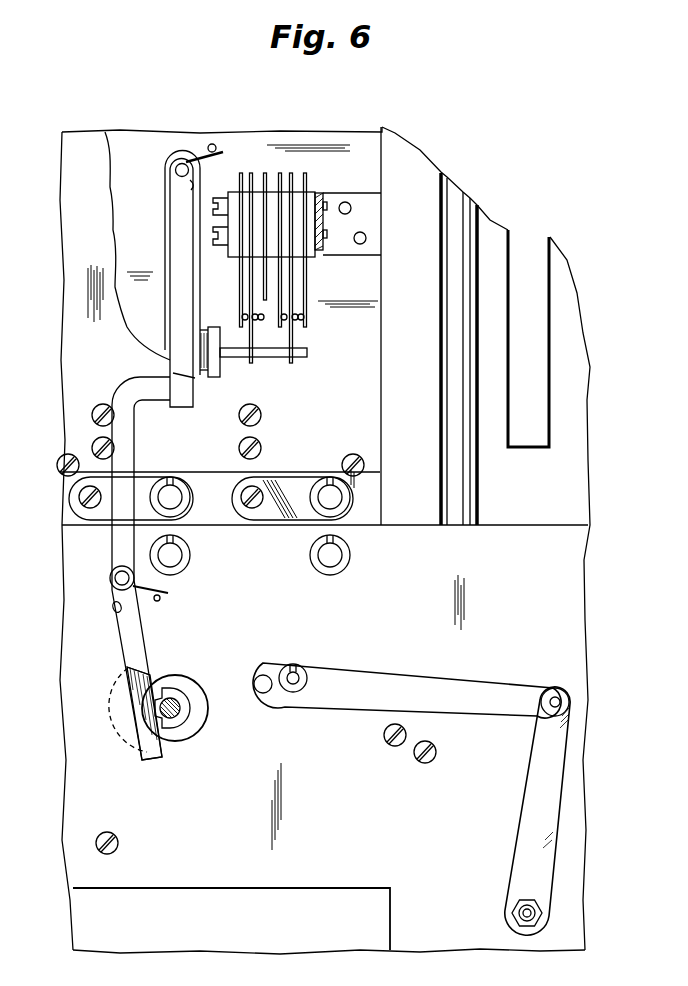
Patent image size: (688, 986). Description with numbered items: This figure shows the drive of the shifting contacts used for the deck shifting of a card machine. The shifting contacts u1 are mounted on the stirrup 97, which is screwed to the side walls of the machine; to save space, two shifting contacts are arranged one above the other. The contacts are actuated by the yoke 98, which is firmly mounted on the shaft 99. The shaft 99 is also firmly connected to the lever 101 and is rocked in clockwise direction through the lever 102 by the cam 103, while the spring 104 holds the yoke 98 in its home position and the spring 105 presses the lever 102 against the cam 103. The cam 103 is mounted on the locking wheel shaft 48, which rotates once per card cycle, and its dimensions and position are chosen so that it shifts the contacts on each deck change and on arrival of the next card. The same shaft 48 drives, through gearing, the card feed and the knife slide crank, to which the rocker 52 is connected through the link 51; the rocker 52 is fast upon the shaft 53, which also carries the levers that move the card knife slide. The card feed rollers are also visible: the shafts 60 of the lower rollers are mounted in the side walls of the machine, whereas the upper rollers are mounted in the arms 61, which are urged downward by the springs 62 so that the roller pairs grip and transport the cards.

The locking wheel shaft 48 is at (175, 718).
The link 51 is at (507, 702).
The rocker 52 is at (543, 798).
The shaft 53 is at (515, 913).
The shafts of the lower rollers 60 is at (333, 497).
The arms 61 is at (103, 510).
The springs 62 is at (100, 472).
The stirrup 97 is at (333, 212).
The yoke 98 is at (212, 378).
The shaft 99 is at (183, 163).
The lever 101 is at (182, 257).
The lever 102 is at (140, 757).
The cam 103 is at (183, 713).
The spring 104 is at (223, 152).
The spring 105 is at (113, 607).
The contacts u1 is at (255, 320).